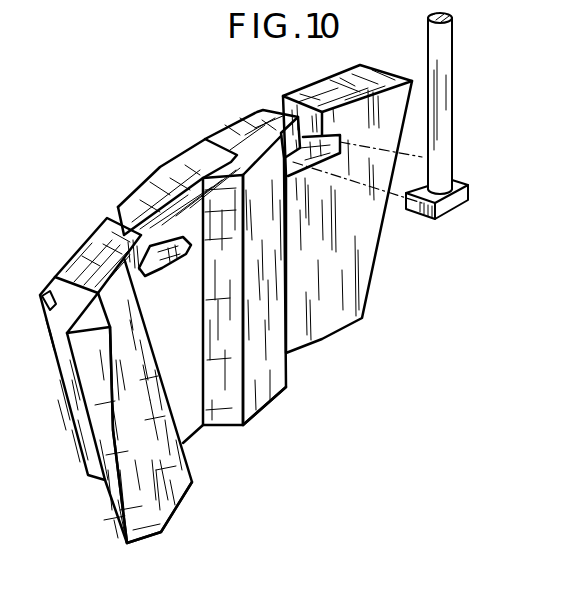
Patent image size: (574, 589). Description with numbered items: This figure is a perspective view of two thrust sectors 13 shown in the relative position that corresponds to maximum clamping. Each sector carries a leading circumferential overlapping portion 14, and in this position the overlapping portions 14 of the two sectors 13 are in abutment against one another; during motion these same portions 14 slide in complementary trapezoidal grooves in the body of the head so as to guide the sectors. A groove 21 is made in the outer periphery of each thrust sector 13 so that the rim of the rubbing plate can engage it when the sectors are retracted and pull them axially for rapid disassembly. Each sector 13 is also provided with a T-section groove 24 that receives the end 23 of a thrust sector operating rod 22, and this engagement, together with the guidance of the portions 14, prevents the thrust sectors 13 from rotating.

The thrust sector 13 is at (62, 266).
The leading circumferential overlapping portion 14 is at (166, 468).
The groove 21 is at (50, 304).
The thrust sector operating rod 22 is at (440, 32).
The end of operating rod 23 is at (452, 205).
The T-section groove 24 is at (163, 272).